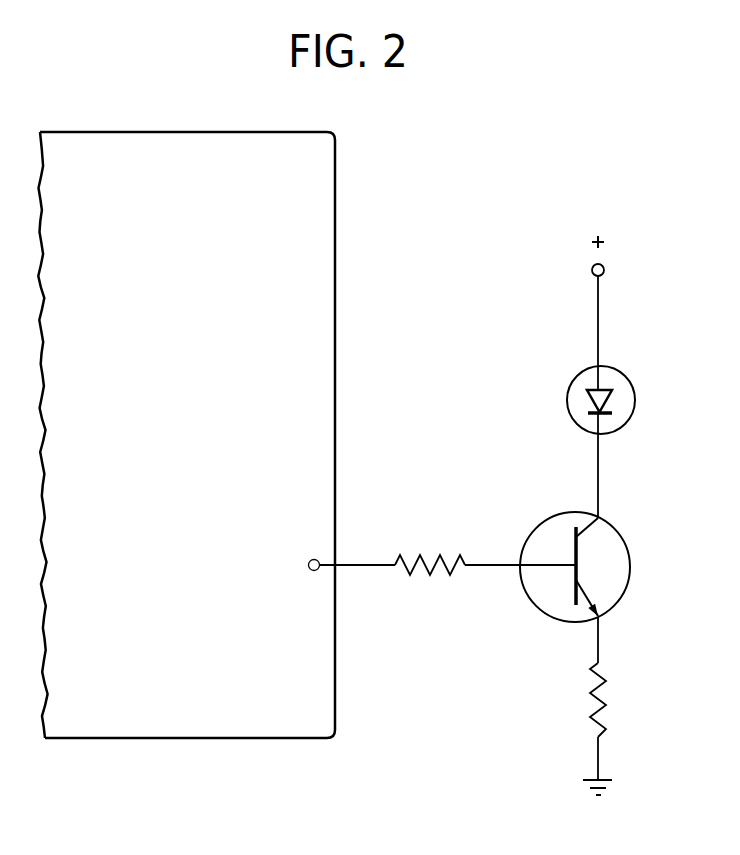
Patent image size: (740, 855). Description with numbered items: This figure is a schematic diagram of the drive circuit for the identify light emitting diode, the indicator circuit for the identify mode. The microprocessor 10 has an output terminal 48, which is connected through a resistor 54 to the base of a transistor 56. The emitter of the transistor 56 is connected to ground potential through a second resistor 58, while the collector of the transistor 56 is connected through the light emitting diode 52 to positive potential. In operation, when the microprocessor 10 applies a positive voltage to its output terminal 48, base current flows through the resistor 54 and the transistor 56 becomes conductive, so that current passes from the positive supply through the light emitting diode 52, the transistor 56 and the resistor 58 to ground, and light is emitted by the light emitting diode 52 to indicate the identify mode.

The microprocessor 10 is at (322, 198).
The output terminal 48 is at (319, 568).
The light emitting diode 52 is at (634, 392).
The resistor 54 is at (436, 553).
The transistor 56 is at (628, 557).
The resistor 58 is at (600, 706).